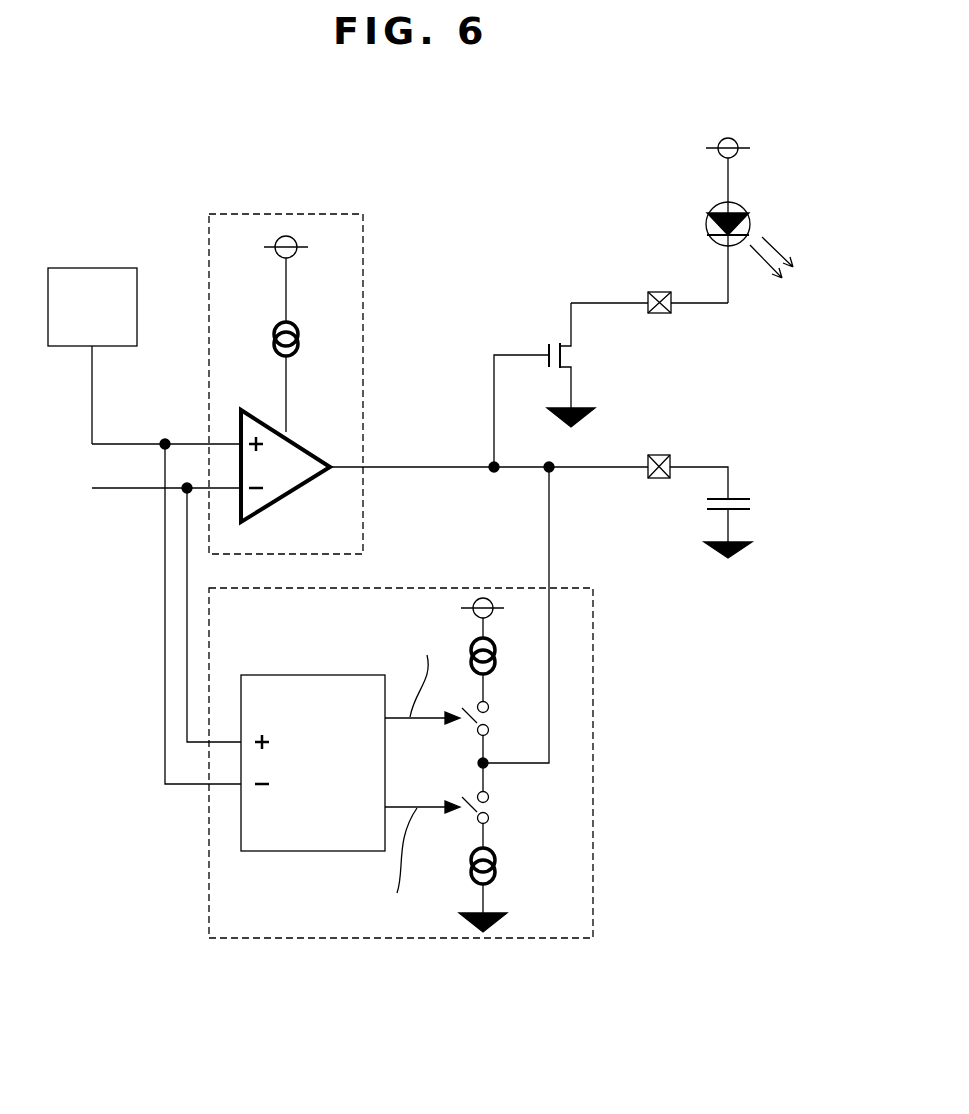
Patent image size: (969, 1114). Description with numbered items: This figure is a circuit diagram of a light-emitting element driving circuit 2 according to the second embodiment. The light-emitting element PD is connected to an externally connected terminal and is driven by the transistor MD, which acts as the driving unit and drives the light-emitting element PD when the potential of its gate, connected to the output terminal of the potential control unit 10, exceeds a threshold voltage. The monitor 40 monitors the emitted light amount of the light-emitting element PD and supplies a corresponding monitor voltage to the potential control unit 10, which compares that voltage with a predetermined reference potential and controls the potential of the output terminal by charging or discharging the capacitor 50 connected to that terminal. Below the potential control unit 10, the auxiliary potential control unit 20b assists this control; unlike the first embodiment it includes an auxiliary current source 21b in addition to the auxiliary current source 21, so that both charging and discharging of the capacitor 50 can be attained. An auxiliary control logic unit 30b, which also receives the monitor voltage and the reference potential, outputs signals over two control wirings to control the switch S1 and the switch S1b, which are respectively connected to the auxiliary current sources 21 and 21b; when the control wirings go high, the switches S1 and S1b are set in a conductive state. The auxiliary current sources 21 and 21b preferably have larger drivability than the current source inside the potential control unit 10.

The light-emitting element driving circuit 2 is at (160, 895).
The monitor 40 is at (120, 268).
The potential control unit 10 is at (364, 247).
The transistor MD is at (551, 335).
The light-emitting element PD is at (706, 216).
The capacitor 50 is at (739, 497).
The auxiliary potential control unit 20b is at (596, 607).
The auxiliary control logic unit 30b is at (329, 674).
The auxiliary current source 21 is at (496, 655).
The auxiliary current source 21b is at (495, 857).
The switch S1 is at (463, 729).
The switch S1b is at (466, 819).